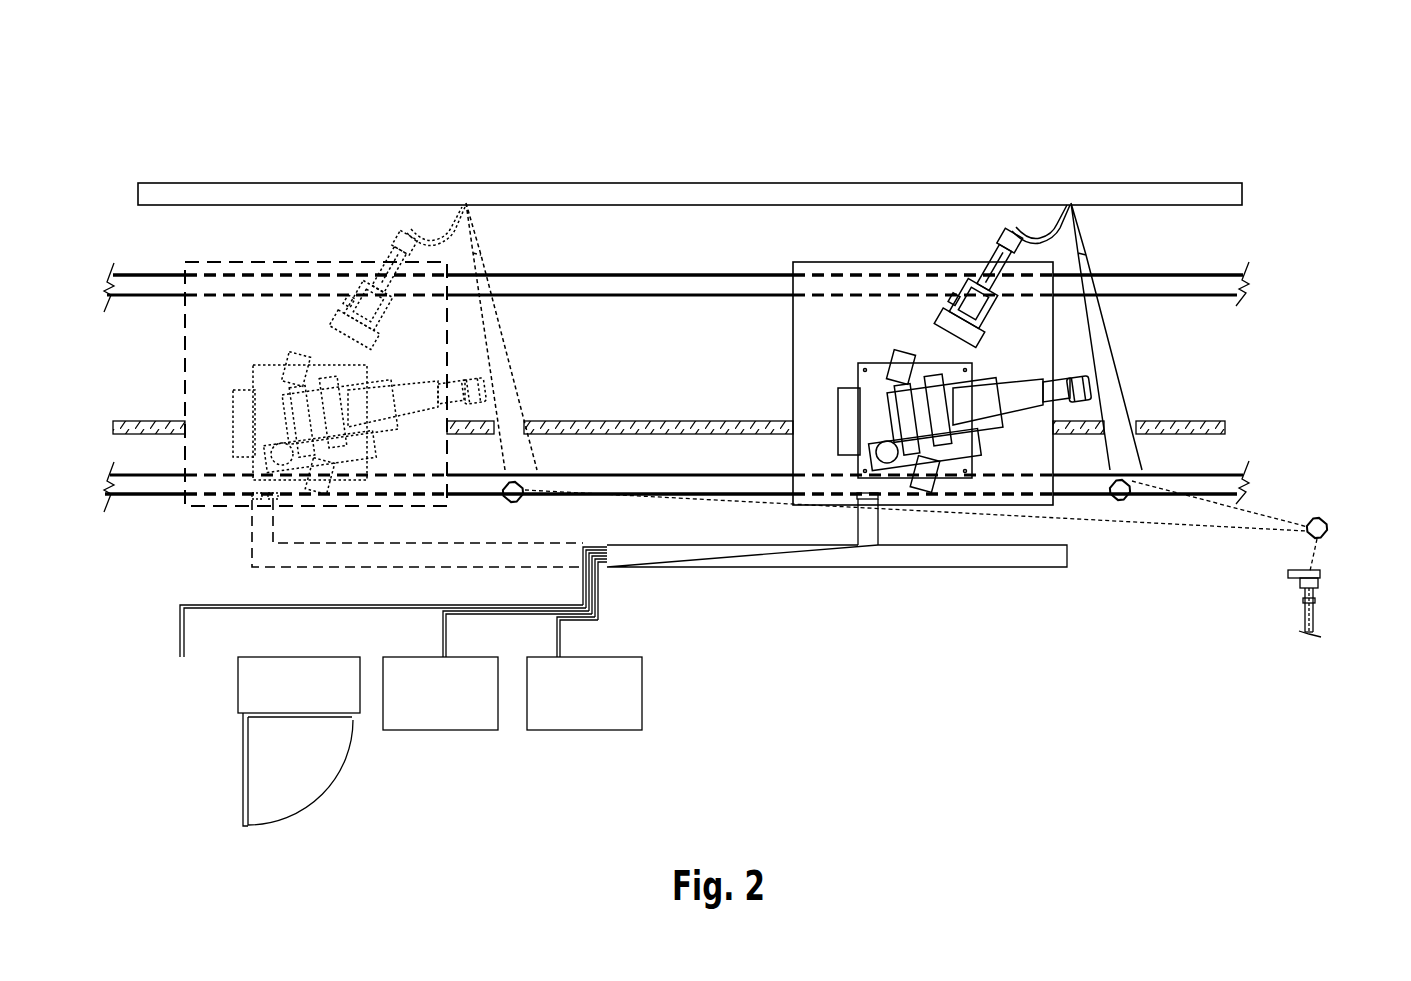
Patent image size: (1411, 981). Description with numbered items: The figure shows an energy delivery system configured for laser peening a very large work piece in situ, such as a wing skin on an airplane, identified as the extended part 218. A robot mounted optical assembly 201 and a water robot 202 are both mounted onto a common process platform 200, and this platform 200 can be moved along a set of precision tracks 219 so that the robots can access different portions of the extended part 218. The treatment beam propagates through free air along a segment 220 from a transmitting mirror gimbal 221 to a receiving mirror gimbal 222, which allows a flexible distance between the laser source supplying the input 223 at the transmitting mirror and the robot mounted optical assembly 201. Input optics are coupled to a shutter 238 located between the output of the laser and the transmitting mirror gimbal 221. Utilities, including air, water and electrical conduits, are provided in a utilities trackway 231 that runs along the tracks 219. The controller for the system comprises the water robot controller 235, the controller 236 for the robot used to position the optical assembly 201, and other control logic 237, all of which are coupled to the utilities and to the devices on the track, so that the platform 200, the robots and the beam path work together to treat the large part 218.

The extended part 218 is at (940, 190).
The precision tracks 219 is at (103, 297).
The common process platform 200 is at (200, 342).
The robot mounted optical assembly 201 is at (508, 338).
The water robot 202 is at (392, 255).
The receiving mirror gimbal 222 is at (522, 502).
The segment 220 is at (1252, 520).
The transmitting mirror gimbal 221 is at (1320, 538).
The shutter 238 is at (1297, 580).
The input 223 is at (1314, 634).
The utilities trackway 231 is at (797, 557).
The water robot controller 235 is at (582, 733).
The controller 236 is at (437, 733).
The control logic 237 is at (235, 680).